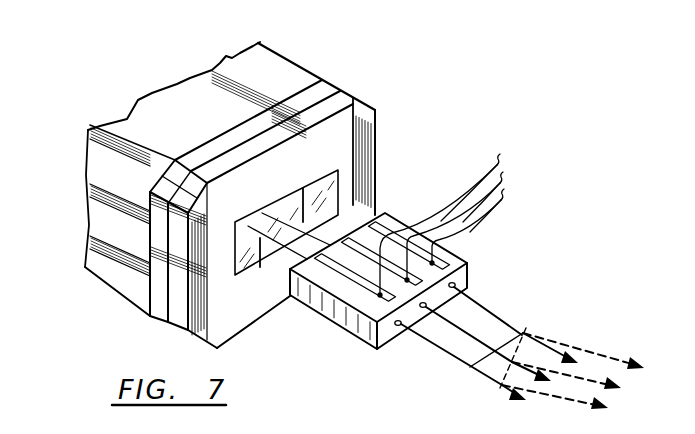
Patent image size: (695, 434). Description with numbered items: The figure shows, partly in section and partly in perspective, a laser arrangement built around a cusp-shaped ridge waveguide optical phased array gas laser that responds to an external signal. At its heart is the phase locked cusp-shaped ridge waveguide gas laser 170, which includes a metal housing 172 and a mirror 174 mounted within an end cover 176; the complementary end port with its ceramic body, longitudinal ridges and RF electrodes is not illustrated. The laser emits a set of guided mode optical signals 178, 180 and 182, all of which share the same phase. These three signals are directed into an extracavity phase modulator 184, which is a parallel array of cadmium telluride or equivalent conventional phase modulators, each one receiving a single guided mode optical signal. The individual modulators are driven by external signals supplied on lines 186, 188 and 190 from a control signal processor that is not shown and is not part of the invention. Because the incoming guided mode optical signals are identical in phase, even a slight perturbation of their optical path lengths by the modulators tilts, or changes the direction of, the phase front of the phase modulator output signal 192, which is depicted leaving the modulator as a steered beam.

The phase locked cusp-shaped ridge waveguide gas laser 170 is at (292, 45).
The metal housing 172 is at (86, 177).
The mirror 174 is at (324, 178).
The end cover 176 is at (378, 113).
The guided mode optical signal 178 is at (260, 238).
The guided mode optical signal 180 is at (303, 188).
The guided mode optical signal 182 is at (348, 218).
The extracavity phase modulator 184 is at (368, 338).
The line 186 is at (494, 207).
The line 188 is at (469, 207).
The line 190 is at (464, 229).
The phase modulator output signal 192 is at (517, 360).